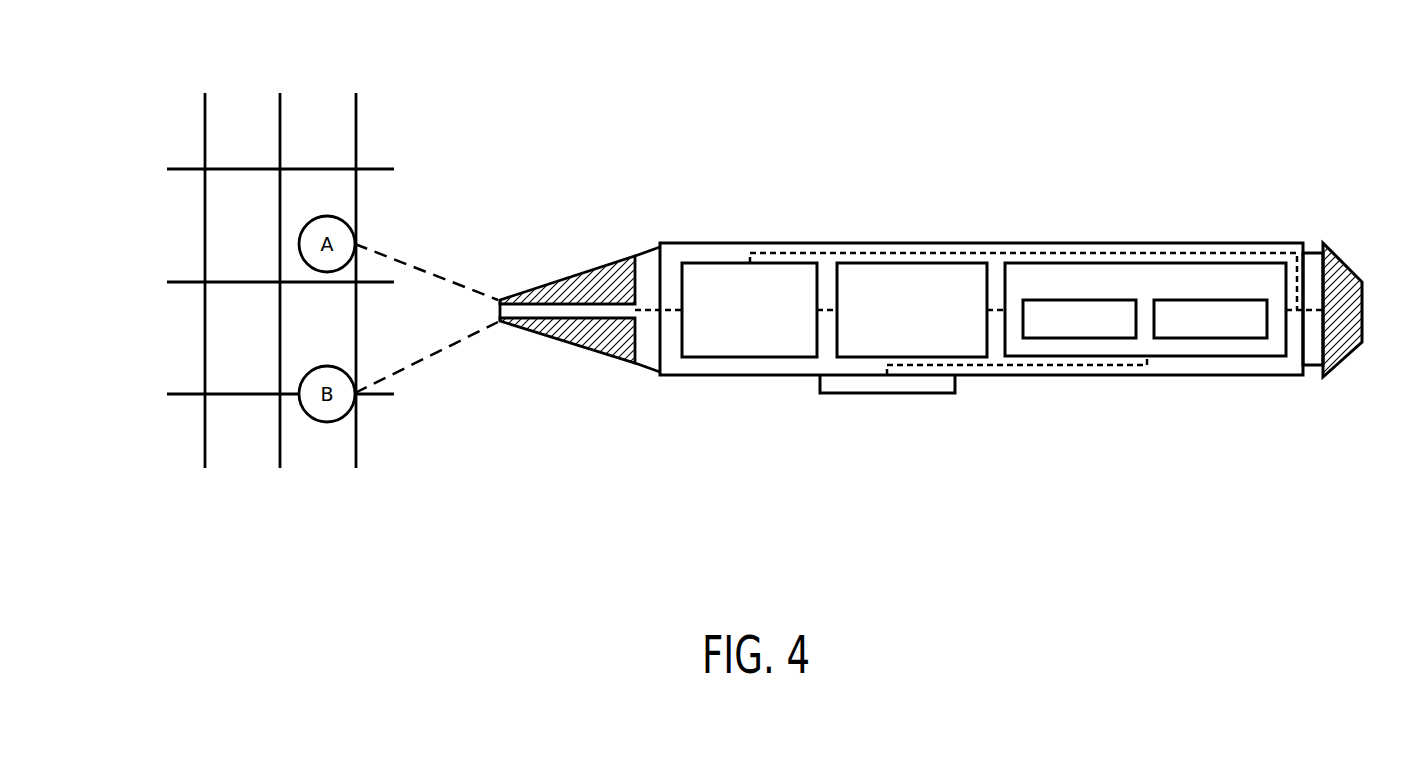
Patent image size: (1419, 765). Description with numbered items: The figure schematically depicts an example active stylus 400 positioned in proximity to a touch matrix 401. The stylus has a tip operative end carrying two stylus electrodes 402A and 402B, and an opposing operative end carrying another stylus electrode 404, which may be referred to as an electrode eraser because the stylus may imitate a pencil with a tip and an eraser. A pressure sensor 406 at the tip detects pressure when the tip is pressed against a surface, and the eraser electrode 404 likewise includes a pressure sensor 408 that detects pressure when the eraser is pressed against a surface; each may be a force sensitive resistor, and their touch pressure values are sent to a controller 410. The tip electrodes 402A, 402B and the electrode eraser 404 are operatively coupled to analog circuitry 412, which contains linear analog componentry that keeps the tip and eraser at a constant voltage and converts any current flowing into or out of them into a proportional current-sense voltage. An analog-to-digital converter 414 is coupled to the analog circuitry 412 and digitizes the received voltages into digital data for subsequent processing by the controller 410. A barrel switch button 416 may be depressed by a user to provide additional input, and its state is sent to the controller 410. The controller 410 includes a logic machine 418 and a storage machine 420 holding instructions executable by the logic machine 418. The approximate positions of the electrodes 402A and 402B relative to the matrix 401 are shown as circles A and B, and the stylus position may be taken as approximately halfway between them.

The active stylus 400 is at (1255, 129).
The touch matrix 401 is at (244, 104).
The stylus electrode 402A is at (583, 273).
The stylus electrode 402B is at (572, 343).
The stylus electrode 404 is at (1342, 263).
The pressure sensor 406 is at (653, 255).
The pressure sensor 408 is at (1313, 252).
The controller 410 is at (1235, 292).
The analog circuitry 412 is at (732, 350).
The analog-to-digital (A/D) converter 414 is at (895, 350).
The barrel switch button 416 is at (848, 395).
The logic machine 418 is at (1115, 329).
The storage machine 420 is at (1247, 329).